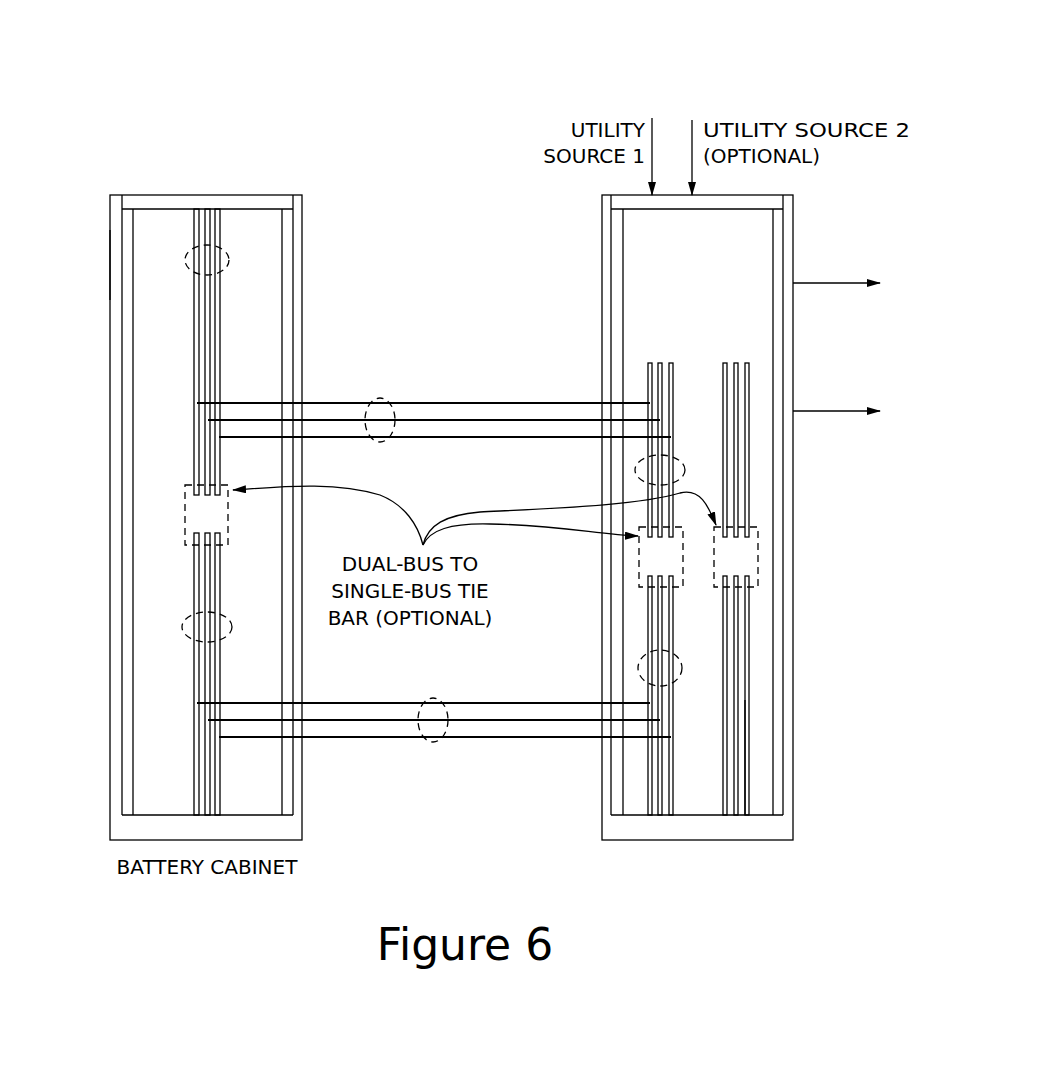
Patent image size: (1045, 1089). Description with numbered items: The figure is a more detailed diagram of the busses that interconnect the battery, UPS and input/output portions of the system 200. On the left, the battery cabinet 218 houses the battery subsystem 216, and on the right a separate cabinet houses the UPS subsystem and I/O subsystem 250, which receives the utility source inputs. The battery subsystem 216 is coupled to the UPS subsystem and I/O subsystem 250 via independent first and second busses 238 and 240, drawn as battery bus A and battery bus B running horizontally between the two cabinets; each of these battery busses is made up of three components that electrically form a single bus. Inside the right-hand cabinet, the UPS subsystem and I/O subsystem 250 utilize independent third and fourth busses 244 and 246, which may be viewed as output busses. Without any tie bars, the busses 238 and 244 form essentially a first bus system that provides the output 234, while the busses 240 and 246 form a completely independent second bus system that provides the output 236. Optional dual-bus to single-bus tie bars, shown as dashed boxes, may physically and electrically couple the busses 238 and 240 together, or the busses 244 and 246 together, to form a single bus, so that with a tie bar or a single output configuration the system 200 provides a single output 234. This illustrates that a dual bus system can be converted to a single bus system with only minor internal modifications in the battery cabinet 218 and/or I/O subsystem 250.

The system 200 is at (472, 97).
The battery subsystem 216 is at (224, 195).
The battery cabinet 218 is at (110, 235).
The output 234 is at (830, 283).
The output 236 is at (822, 411).
The first bus 238 is at (547, 403).
The second bus 240 is at (333, 739).
The third bus 244 is at (751, 512).
The fourth bus 246 is at (751, 759).
The cabinet 250 is at (794, 841).